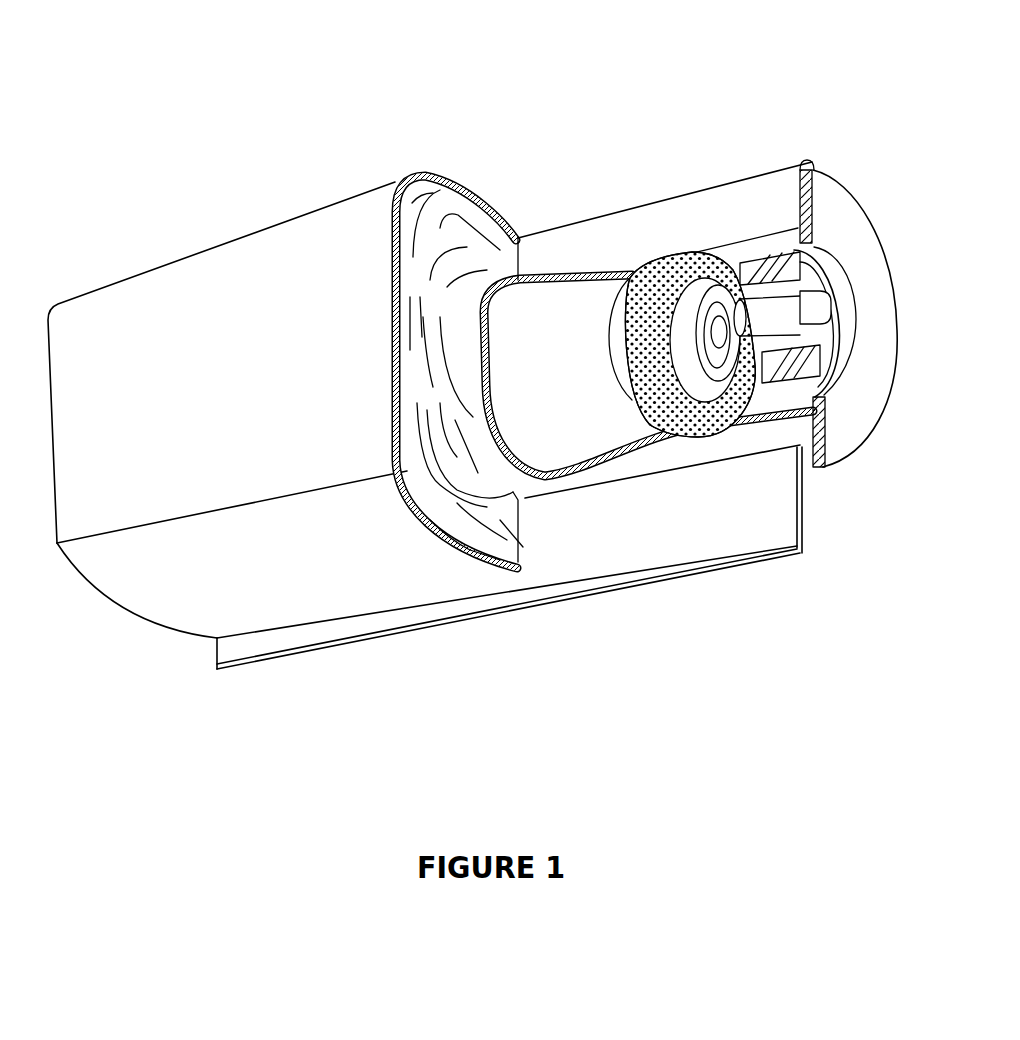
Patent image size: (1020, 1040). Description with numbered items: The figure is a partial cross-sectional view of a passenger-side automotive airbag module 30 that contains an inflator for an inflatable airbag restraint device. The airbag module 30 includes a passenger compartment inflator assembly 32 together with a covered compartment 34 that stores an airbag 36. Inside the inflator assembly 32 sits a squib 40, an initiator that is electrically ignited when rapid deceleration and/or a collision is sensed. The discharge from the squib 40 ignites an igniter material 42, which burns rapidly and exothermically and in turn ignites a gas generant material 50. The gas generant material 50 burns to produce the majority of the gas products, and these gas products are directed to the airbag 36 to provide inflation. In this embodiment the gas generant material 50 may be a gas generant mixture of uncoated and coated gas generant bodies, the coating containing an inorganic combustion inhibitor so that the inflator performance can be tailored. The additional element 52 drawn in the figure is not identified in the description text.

The automotive airbag module 30 is at (550, 162).
The passenger compartment inflator assembly 32 is at (763, 242).
The covered compartment 34 is at (145, 278).
The airbag 36 is at (500, 540).
The squib 40 is at (827, 307).
The igniter material 42 is at (727, 343).
The gas generant material 50 is at (820, 355).
The pad 52 is at (670, 257).